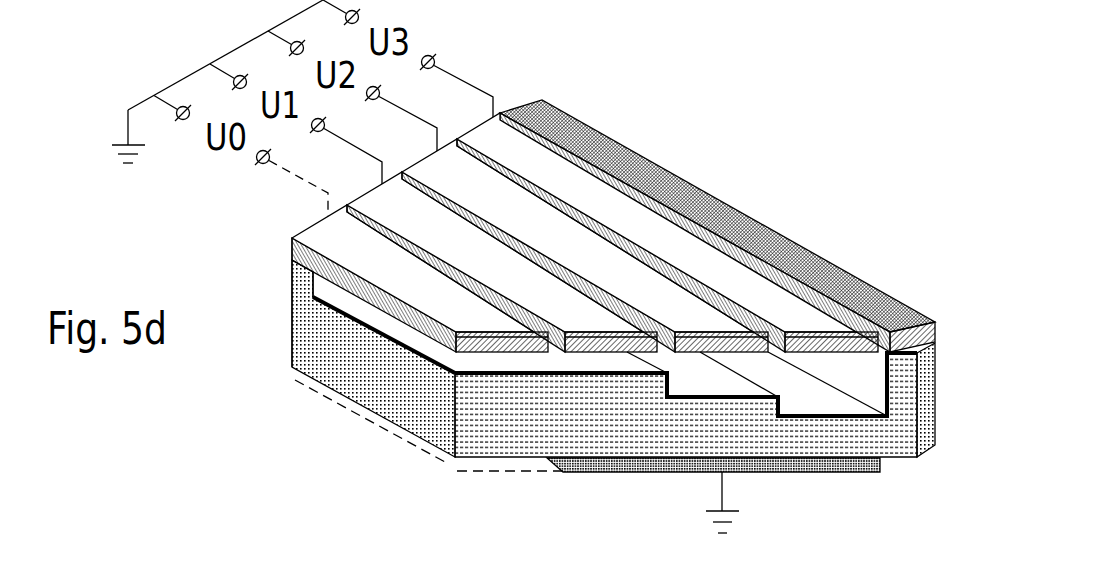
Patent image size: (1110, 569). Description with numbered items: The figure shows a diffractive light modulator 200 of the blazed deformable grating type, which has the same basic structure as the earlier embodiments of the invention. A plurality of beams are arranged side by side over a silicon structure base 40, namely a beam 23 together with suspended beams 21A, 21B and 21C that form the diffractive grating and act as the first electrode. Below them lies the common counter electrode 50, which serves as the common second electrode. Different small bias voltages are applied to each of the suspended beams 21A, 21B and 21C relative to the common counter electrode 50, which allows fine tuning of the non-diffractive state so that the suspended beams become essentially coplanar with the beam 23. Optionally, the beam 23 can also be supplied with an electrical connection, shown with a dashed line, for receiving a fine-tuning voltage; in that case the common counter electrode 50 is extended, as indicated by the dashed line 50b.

The diffractive light modulator 200 is at (556, 298).
The beam 23 is at (418, 280).
The suspended beam 21A is at (623, 325).
The suspended beam 21B is at (583, 250).
The suspended beam 21C is at (550, 167).
The silicon structure base 40 is at (407, 375).
The common counter electrode 50 is at (605, 472).
The extended counter electrode portion 50b is at (447, 463).